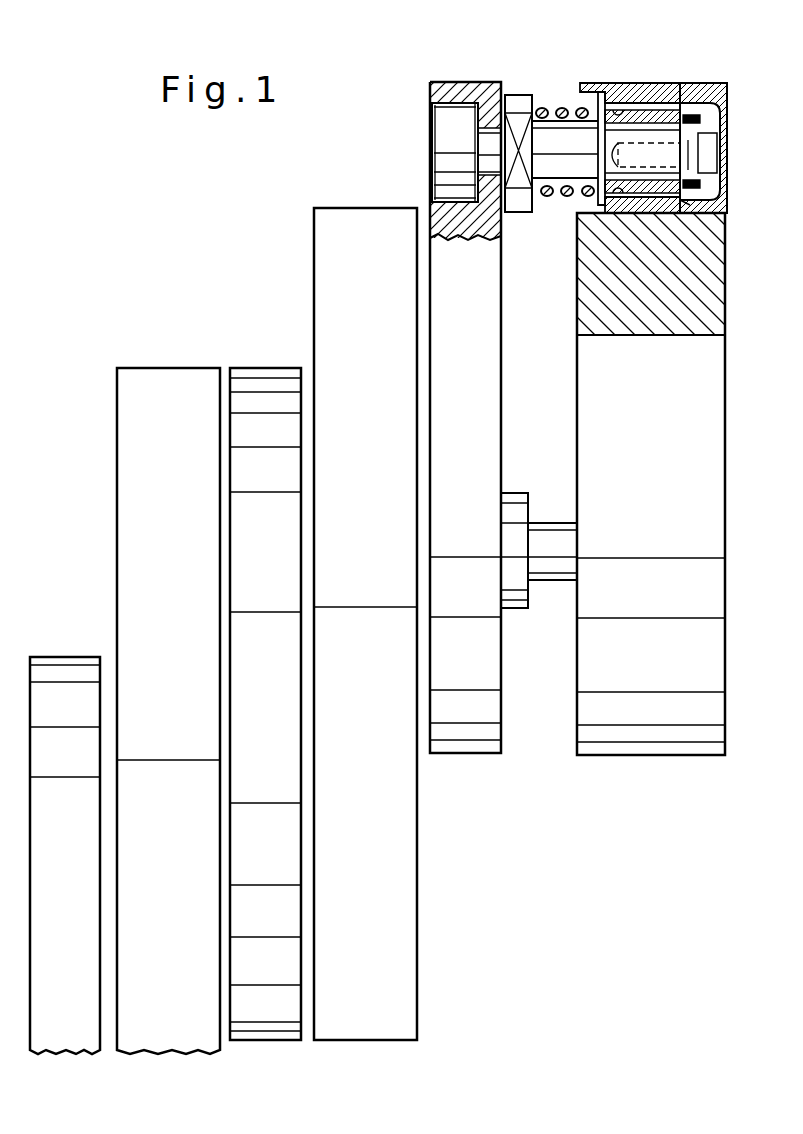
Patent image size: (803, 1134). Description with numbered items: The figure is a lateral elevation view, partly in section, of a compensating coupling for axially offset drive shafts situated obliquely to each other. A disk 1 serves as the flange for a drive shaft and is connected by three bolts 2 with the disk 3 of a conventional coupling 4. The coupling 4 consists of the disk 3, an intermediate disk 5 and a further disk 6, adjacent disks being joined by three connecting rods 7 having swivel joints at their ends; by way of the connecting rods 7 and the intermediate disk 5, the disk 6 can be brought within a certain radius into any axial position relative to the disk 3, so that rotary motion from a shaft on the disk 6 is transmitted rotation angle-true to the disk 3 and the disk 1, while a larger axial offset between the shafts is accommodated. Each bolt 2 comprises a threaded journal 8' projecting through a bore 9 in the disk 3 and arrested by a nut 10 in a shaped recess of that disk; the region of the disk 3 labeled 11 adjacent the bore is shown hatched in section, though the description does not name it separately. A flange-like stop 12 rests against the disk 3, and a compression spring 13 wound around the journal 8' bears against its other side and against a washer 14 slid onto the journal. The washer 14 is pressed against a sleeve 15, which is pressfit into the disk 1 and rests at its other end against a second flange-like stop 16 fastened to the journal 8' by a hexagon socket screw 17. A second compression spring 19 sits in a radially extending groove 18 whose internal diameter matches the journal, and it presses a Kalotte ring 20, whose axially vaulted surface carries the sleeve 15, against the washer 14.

The disk 1 is at (692, 740).
The bolt 2 is at (552, 565).
The disk 3 is at (480, 742).
The coupling 4 is at (255, 1084).
The intermediate disk 5 is at (258, 385).
The disk 6 is at (58, 678).
The connecting rods 7 is at (155, 385).
The journal 8' is at (565, 182).
The bore 9 is at (493, 108).
The nut 10 is at (445, 135).
The support flange 11 is at (450, 86).
The flange-like stop 12 is at (519, 98).
The compression spring 13 is at (558, 110).
The washer 14 is at (600, 90).
The sleeve 15 is at (658, 96).
The second flange-like stop 16 is at (718, 95).
The hexagon socket screw 17 is at (712, 147).
The groove 18 is at (683, 200).
The compression spring 19 is at (677, 82).
The Kalotte ring 20 is at (626, 117).